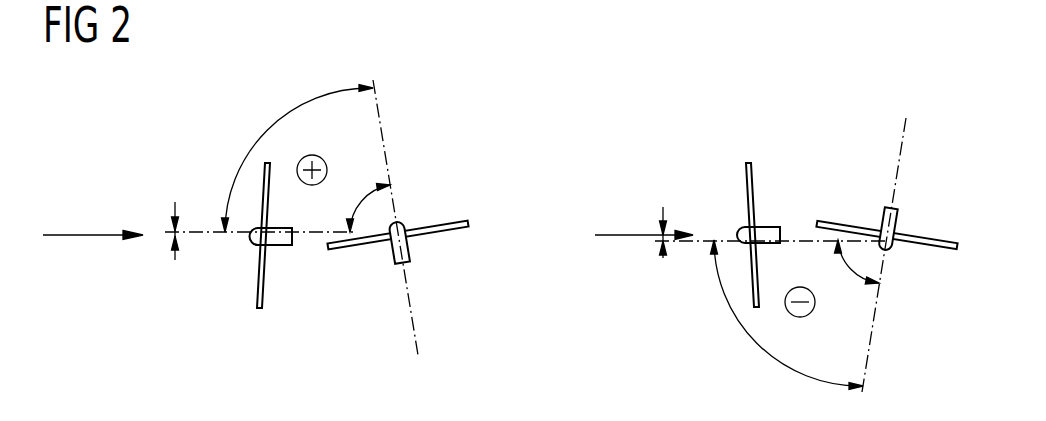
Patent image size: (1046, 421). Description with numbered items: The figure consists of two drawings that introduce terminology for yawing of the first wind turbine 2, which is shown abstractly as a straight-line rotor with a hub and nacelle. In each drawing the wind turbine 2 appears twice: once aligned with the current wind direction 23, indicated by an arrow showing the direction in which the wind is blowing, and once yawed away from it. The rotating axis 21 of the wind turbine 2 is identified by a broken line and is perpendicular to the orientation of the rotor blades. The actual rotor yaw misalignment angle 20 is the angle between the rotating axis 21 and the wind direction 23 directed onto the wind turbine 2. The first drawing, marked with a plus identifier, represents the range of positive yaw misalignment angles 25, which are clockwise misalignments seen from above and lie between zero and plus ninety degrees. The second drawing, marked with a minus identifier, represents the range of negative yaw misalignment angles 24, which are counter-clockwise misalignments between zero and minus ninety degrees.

The first wind turbine 2 is at (276, 245).
The actual rotor yaw misalignment angle 20 is at (167, 232).
The rotating axis 21 is at (213, 232).
The current wind direction 23 is at (80, 235).
The negative yaw misalignment angles 24 is at (753, 338).
The positive yaw misalignment angles 25 is at (267, 128).